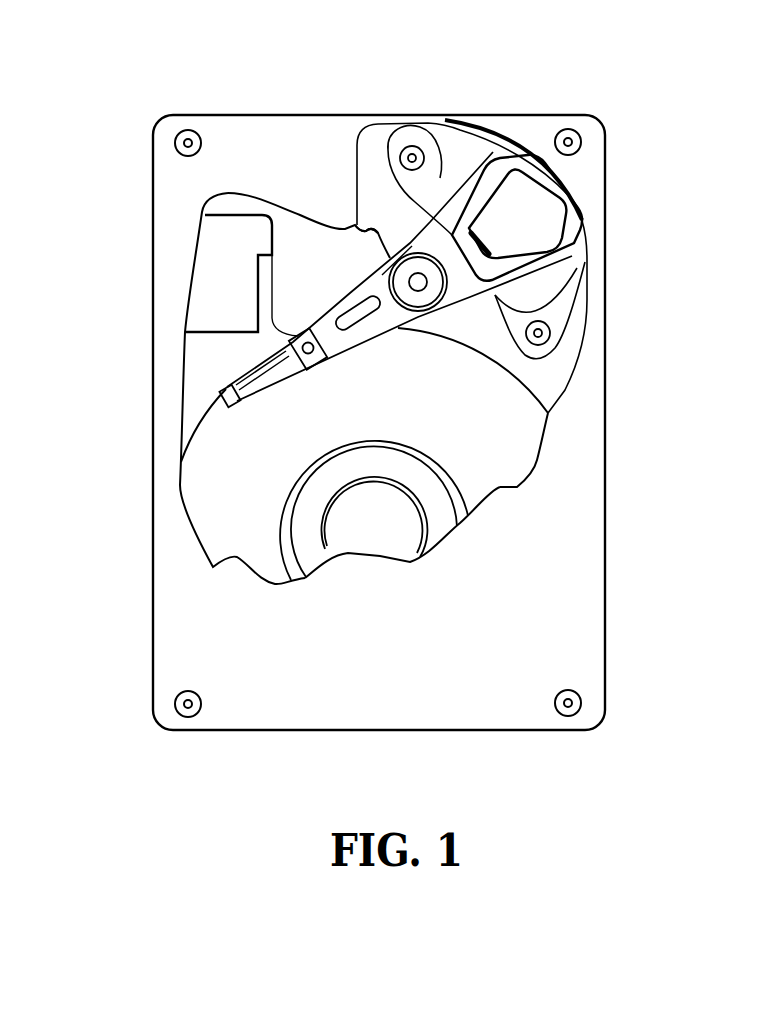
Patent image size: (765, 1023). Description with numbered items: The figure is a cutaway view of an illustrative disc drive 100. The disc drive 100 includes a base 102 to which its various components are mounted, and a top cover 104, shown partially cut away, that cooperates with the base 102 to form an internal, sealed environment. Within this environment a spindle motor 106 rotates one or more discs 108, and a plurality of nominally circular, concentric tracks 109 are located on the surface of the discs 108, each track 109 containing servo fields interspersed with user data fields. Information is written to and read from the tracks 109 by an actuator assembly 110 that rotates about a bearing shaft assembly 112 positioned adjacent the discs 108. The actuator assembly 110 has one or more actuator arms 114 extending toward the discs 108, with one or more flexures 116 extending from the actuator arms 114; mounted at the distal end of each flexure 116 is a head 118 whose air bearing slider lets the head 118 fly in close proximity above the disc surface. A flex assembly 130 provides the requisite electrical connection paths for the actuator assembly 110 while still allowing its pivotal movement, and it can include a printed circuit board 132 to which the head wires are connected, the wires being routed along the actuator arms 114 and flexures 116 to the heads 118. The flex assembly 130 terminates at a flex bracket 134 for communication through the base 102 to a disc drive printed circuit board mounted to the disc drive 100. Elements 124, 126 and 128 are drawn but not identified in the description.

The disc drive 100 is at (185, 80).
The base 102 is at (205, 378).
The top cover 104 is at (192, 608).
The spindle motor 106 is at (375, 537).
The disc 108 is at (505, 467).
The track 109 is at (289, 527).
The actuator assembly 110 is at (405, 338).
The bearing shaft assembly 112 is at (432, 293).
The actuator arm 114 is at (366, 329).
The flexure 116 is at (264, 372).
The head 118 is at (226, 404).
The voice coil motor top plate 124 is at (443, 116).
The voice coil 126 is at (563, 213).
The magnet 128 is at (445, 177).
The flex assembly 130 is at (353, 284).
The printed circuit board 132 is at (354, 230).
The flex bracket 134 is at (218, 282).